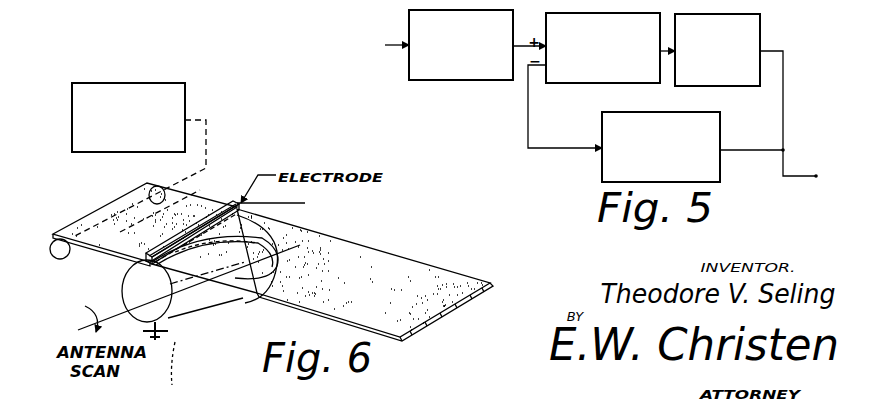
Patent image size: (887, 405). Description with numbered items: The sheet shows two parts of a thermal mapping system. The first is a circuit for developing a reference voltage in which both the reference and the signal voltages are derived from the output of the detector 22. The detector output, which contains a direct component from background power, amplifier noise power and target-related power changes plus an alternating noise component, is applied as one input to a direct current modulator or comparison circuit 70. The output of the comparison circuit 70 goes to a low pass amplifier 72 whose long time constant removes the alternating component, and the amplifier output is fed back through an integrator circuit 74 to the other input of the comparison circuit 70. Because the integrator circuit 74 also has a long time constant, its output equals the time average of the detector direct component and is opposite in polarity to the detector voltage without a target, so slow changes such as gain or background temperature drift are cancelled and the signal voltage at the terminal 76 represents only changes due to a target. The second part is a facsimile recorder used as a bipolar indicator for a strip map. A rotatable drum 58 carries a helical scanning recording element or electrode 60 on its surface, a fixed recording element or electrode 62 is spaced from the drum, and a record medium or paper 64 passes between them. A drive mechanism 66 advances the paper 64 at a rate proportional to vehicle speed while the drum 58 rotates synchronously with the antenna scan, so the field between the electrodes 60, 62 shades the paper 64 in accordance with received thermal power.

In FIG. 5, the detector 22 is at (490, 75).
In FIG. 5, the comparison circuit 70 is at (600, 82).
In FIG. 5, the low pass amplifier 72 is at (731, 84).
In FIG. 5, the integrator circuit 74 is at (604, 165).
In FIG. 5, the terminal 76 is at (816, 175).
In FIG. 6, the drive mechanism 66 is at (181, 100).
In FIG. 6, the record medium or paper 64 is at (382, 256).
In FIG. 6, the rotatable drum 58 is at (186, 305).
In FIG. 6, the scanning recording element or electrode 60 is at (235, 292).
In FIG. 6, the fixed recording element or electrode 62 is at (236, 205).